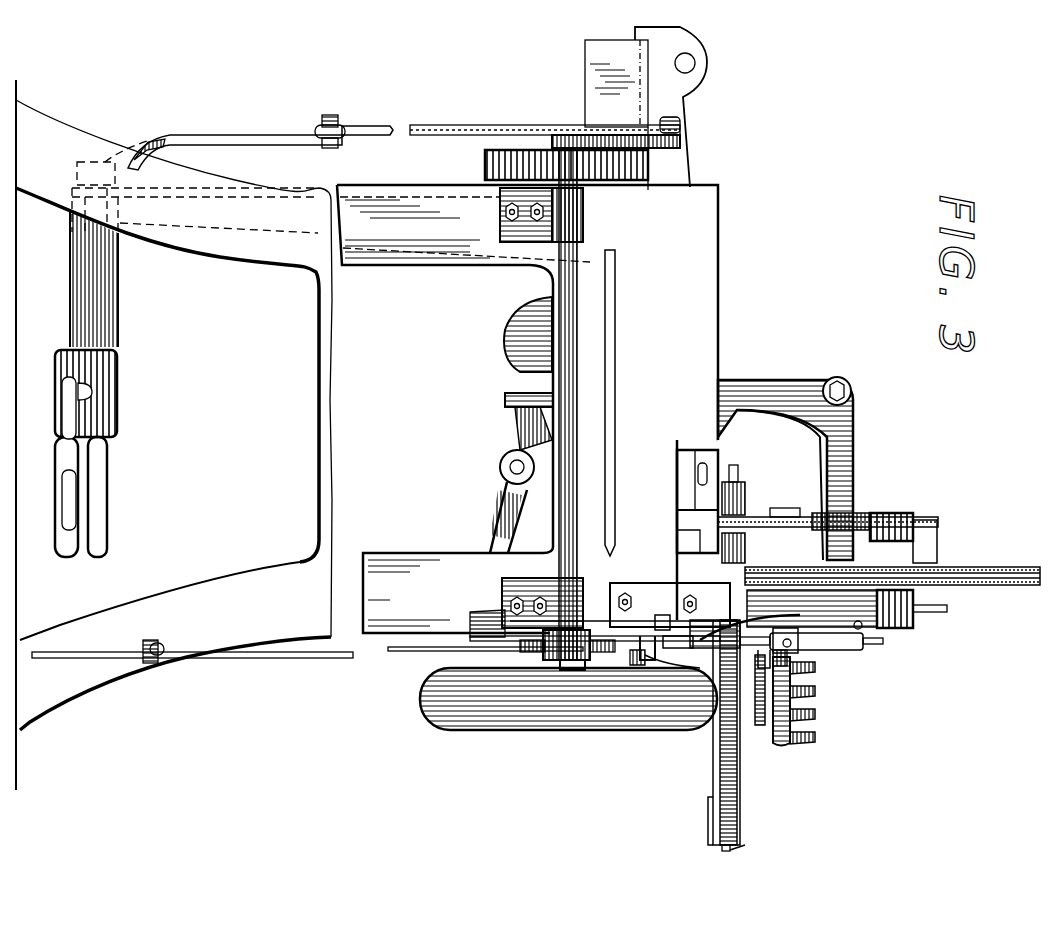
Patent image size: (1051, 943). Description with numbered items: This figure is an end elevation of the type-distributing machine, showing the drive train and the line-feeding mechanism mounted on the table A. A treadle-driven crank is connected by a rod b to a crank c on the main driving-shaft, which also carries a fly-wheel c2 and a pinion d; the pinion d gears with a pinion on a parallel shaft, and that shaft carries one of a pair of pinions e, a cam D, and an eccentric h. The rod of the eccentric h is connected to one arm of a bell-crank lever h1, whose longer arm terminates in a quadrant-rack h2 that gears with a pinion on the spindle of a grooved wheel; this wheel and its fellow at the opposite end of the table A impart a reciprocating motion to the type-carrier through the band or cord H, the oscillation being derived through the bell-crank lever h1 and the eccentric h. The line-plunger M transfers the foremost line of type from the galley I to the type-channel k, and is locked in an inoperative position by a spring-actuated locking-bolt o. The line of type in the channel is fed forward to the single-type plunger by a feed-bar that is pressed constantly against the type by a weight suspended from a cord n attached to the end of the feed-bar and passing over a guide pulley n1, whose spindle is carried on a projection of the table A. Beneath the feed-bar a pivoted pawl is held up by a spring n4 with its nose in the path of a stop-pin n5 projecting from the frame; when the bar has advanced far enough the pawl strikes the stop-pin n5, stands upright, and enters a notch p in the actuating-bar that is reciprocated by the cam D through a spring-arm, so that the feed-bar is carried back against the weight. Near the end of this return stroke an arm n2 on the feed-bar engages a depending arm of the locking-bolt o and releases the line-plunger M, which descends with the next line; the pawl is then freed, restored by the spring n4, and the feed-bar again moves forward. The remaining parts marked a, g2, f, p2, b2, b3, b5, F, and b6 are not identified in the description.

The table A is at (238, 192).
The guide bar a is at (65, 448).
The arm g2 is at (227, 135).
The rod b is at (500, 130).
The pinion e is at (618, 140).
The notch p is at (580, 150).
The pinion d is at (625, 182).
The crank c is at (565, 195).
The cam D is at (540, 640).
The rod f is at (687, 463).
The eccentric h is at (510, 520).
The bell-crank lever h1 is at (375, 655).
The quadrant-rack h2 is at (512, 490).
The fly-wheel c2 is at (568, 699).
The cord n is at (605, 635).
The guide pulley n1 is at (707, 530).
The arm n2 is at (750, 618).
The spring n4 is at (672, 630).
The stop-pin n5 is at (660, 660).
The pin p2 is at (638, 669).
The arm b2 is at (770, 525).
The shaft gear b3 is at (885, 513).
The band or cord H is at (988, 570).
The drum b5 is at (948, 608).
The locking-bolt o is at (787, 640).
The line-plunger M is at (855, 650).
The type-channel k is at (812, 682).
The bar F is at (764, 690).
The galley I is at (735, 760).
The stop b6 is at (745, 845).